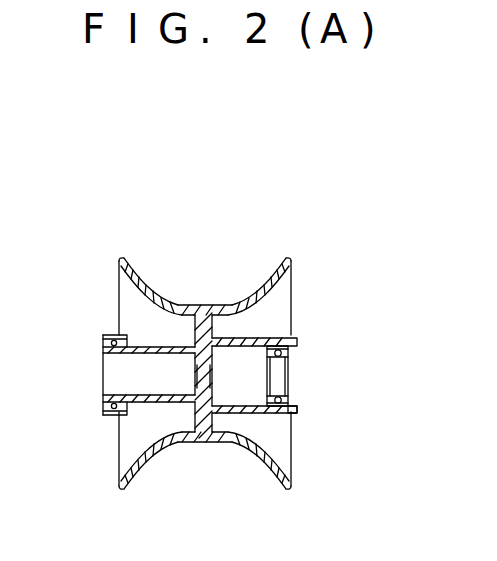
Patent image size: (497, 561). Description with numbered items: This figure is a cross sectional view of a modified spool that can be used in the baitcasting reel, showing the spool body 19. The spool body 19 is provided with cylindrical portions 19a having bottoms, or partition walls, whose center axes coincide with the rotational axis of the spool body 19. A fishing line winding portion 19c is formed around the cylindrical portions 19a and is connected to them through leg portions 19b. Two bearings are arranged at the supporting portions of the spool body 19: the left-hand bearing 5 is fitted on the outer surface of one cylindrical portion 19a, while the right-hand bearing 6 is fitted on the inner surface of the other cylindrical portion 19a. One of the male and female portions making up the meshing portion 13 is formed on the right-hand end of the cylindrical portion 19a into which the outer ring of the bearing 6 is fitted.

The spool body 19 is at (170, 303).
The cylindrical portion 19a is at (265, 338).
The leg portion 19b is at (193, 424).
The fishing line winding portion 19c is at (233, 438).
The left-hand bearing 5 is at (112, 333).
The meshing portion 13 is at (299, 341).
The right-hand bearing 6 is at (298, 412).